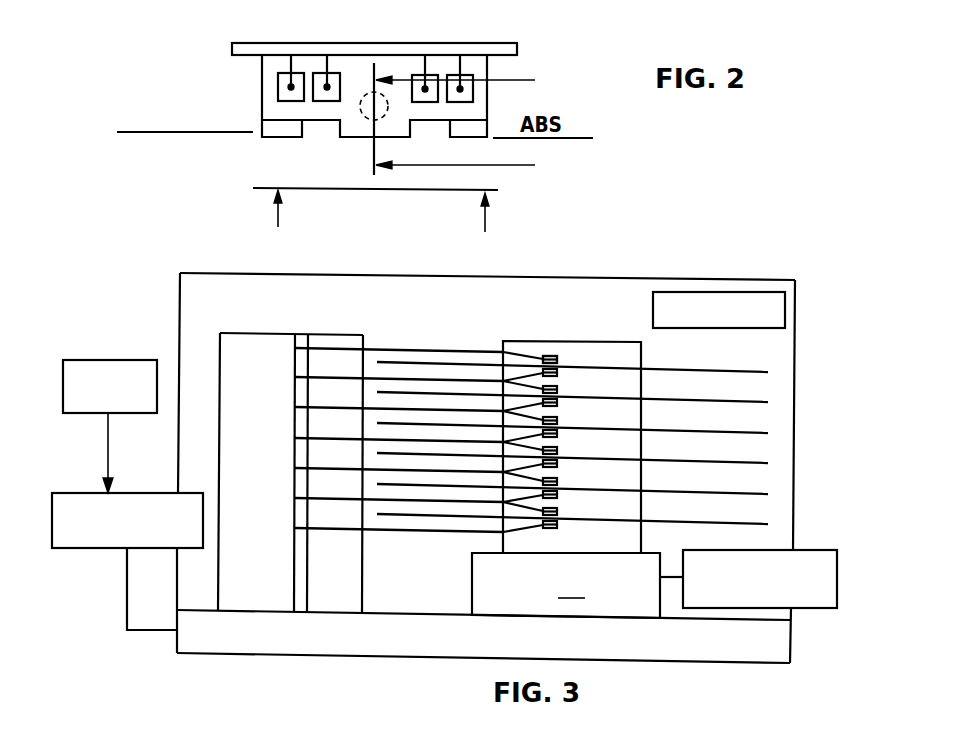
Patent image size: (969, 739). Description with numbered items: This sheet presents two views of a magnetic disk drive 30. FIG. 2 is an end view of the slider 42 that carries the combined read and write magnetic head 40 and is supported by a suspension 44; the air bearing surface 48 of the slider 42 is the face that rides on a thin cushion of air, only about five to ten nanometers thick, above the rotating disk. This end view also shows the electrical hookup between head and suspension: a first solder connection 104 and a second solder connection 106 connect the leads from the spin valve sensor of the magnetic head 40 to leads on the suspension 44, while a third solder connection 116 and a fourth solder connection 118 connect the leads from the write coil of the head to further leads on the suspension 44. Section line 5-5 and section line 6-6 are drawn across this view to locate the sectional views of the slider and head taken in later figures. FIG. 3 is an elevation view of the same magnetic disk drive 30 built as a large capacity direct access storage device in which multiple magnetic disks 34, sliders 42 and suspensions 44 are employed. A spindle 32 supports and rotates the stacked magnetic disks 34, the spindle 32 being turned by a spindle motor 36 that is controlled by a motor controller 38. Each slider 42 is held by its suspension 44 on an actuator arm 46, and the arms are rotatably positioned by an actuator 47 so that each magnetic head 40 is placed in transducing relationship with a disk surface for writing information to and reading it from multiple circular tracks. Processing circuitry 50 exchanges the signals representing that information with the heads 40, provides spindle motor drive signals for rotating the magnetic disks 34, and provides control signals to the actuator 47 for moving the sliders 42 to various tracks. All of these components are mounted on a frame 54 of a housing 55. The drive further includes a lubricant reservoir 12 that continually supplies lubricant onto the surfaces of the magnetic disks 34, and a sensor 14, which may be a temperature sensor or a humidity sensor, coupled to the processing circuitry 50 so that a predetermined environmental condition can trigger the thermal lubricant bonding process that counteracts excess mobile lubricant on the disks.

In FIG. 2, the section line 5- 5 is at (375, 225).
In FIG. 2, the section line 6- 6 is at (465, 122).
In FIG. 3, the lubricant reservoir 12 is at (785, 317).
In FIG. 3, the sensor 14 is at (107, 360).
In FIG. 3, the magnetic disk drive 30 is at (664, 352).
In FIG. 3, the spindle 32 is at (622, 341).
In FIG. 3, the magnetic disk 34 is at (750, 372).
In FIG. 3, the spindle motor 36 is at (577, 585).
In FIG. 3, the motor controller 38 is at (823, 610).
In FIG. 2, the magnetic head 40 is at (353, 139).
In FIG. 2, the slider 42 is at (262, 80).
In FIG. 3, the slider 42 is at (548, 376).
In FIG. 3, the suspension 44 is at (536, 360).
In FIG. 3, the actuator arm 46 is at (458, 385).
In FIG. 3, the actuator 47 is at (250, 333).
In FIG. 2, the air bearing surface 48 is at (165, 133).
In FIG. 3, the processing circuitry 50 is at (92, 548).
In FIG. 3, the frame 54 is at (287, 653).
In FIG. 3, the housing 55 is at (653, 280).
In FIG. 2, the first solder connection 104 is at (278, 50).
In FIG. 2, the second solder connection 106 is at (446, 51).
In FIG. 2, the third solder connection 116 is at (317, 50).
In FIG. 2, the fourth solder connection 118 is at (406, 51).